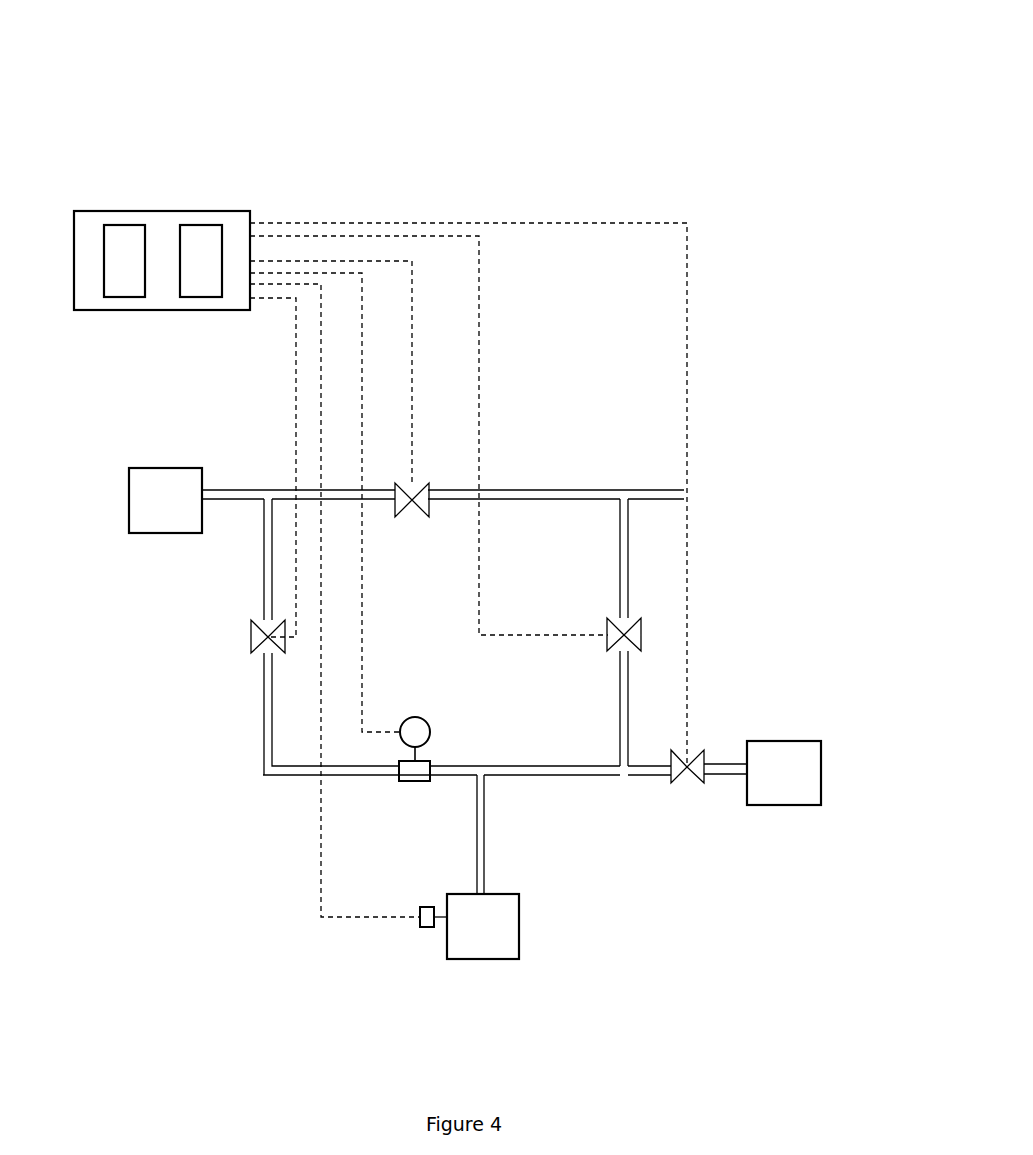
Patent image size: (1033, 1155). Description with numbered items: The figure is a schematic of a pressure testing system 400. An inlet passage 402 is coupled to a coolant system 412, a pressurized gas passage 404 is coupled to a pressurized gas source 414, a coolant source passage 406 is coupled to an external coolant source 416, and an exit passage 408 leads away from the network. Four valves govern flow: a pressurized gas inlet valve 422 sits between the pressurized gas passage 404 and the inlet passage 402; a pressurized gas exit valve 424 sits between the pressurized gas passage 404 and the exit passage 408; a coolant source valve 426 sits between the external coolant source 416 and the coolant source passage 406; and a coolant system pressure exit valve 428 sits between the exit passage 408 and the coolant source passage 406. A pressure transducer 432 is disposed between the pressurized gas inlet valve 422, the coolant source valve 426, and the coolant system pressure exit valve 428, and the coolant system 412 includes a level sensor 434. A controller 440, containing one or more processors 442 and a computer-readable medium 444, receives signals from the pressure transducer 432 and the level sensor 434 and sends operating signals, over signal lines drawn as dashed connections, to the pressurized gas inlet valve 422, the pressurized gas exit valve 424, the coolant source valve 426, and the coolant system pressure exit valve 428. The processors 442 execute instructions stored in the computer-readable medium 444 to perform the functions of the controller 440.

The pressure testing system 400 is at (648, 99).
The inlet passage 402 is at (263, 783).
The pressurized gas passage 404 is at (266, 486).
The coolant source passage 406 is at (607, 793).
The exit passage 408 is at (619, 482).
The coolant system 412 is at (483, 867).
The pressurized gas source 414 is at (165, 500).
The external coolant source 416 is at (784, 773).
The pressurized gas inlet valve 422 is at (249, 636).
The pressurized gas exit valve 424 is at (430, 489).
The coolant source valve 426 is at (687, 779).
The coolant system pressure exit valve 428 is at (643, 634).
The pressure transducer 432 is at (434, 749).
The level sensor 434 is at (425, 915).
The controller 440 is at (167, 222).
The processor 442 is at (120, 232).
The computer-readable medium 444 is at (212, 235).